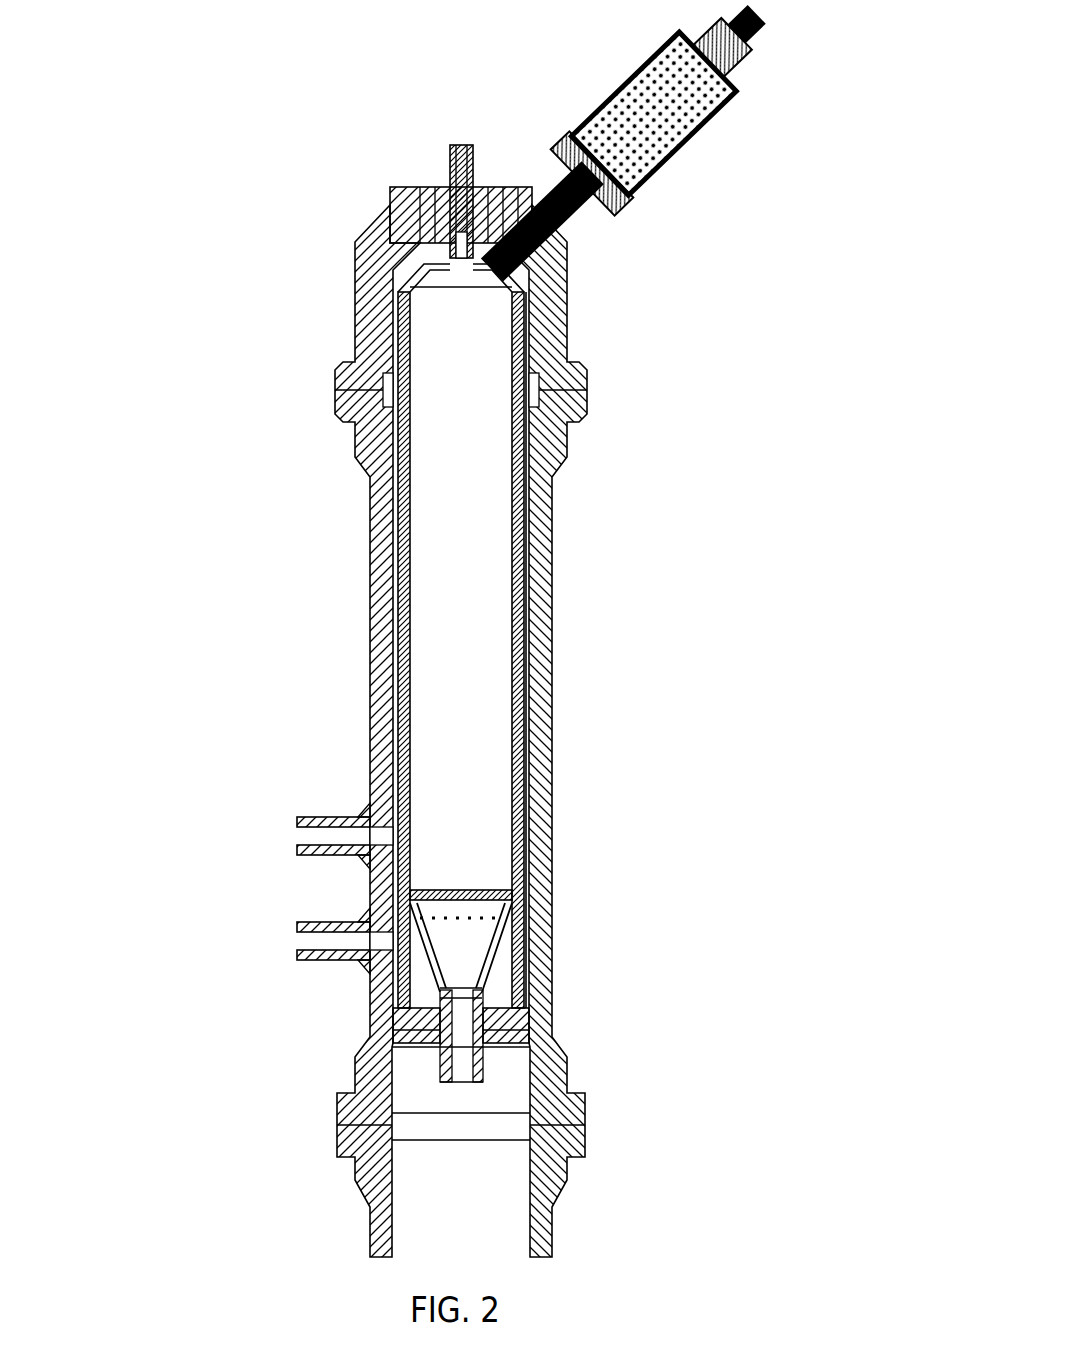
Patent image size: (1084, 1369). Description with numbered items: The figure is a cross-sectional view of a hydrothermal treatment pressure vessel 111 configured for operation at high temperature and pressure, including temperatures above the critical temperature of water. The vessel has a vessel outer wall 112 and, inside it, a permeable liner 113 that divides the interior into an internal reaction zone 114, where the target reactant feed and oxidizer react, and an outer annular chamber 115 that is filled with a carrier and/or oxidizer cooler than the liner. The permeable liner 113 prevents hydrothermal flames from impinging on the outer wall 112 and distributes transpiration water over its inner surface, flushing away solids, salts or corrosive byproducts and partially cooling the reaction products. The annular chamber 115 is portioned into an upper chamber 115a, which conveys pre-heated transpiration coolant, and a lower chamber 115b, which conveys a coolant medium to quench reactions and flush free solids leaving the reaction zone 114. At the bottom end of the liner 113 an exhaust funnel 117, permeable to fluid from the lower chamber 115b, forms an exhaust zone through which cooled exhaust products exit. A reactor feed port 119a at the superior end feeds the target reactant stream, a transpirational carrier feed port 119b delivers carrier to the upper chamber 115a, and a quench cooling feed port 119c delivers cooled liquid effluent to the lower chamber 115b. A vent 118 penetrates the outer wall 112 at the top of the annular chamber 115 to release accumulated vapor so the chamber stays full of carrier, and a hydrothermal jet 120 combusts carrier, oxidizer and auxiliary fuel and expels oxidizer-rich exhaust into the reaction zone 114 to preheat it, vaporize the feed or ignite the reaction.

The pressure vessel 111 is at (296, 280).
The vessel outer wall 112 is at (372, 653).
The permeable liner 113 is at (398, 598).
The reaction zone 114 is at (482, 666).
The annular chamber 115 is at (528, 733).
The upper chamber 115a is at (528, 791).
The lower chamber 115b is at (508, 981).
The exhaust funnel 117 is at (497, 958).
The vent 118 is at (420, 215).
The reactor feed port 119a is at (455, 160).
The transpirational carrier feed port 119b is at (296, 838).
The quench cooling feed port 119c is at (296, 953).
The hydrothermal jet 120 is at (716, 184).